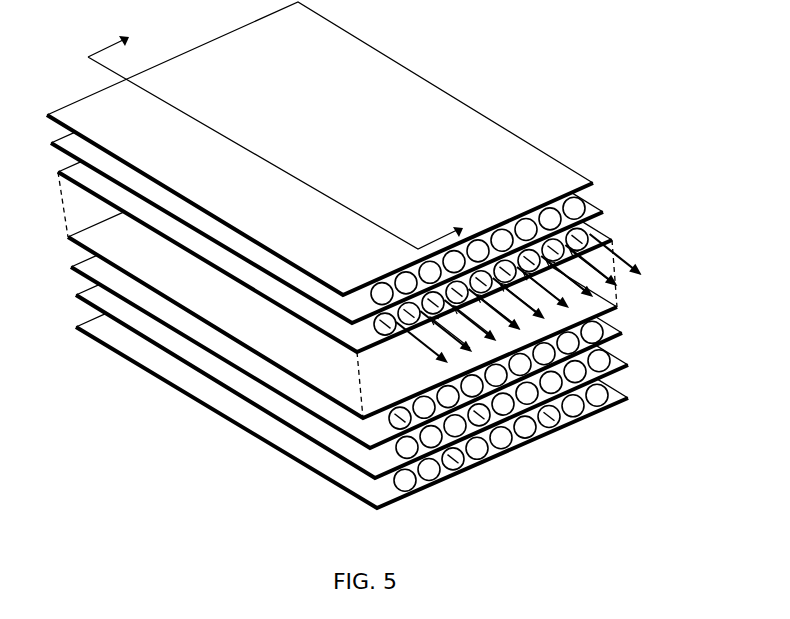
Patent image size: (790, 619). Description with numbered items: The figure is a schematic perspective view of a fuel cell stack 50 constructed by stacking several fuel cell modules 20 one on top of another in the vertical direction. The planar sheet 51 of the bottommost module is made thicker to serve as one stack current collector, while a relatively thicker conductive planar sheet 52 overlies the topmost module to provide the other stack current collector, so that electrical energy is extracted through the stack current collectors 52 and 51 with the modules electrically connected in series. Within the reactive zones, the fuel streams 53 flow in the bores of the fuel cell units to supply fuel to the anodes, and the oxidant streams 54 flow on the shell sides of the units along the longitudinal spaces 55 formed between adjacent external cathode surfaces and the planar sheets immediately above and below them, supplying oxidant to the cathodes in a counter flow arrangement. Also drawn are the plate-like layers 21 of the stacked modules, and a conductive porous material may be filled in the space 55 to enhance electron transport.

The fuel cell stack 50 is at (452, 66).
The conductive planar sheet 52 is at (348, 160).
The planar sheet 51 is at (133, 356).
The fuel cell module 20 is at (385, 408).
The intermediate plates 21 is at (272, 397).
The fuel streams 53 is at (610, 292).
The oxidant streams 54 is at (456, 331).
The longitudinal spaces 55 is at (493, 453).